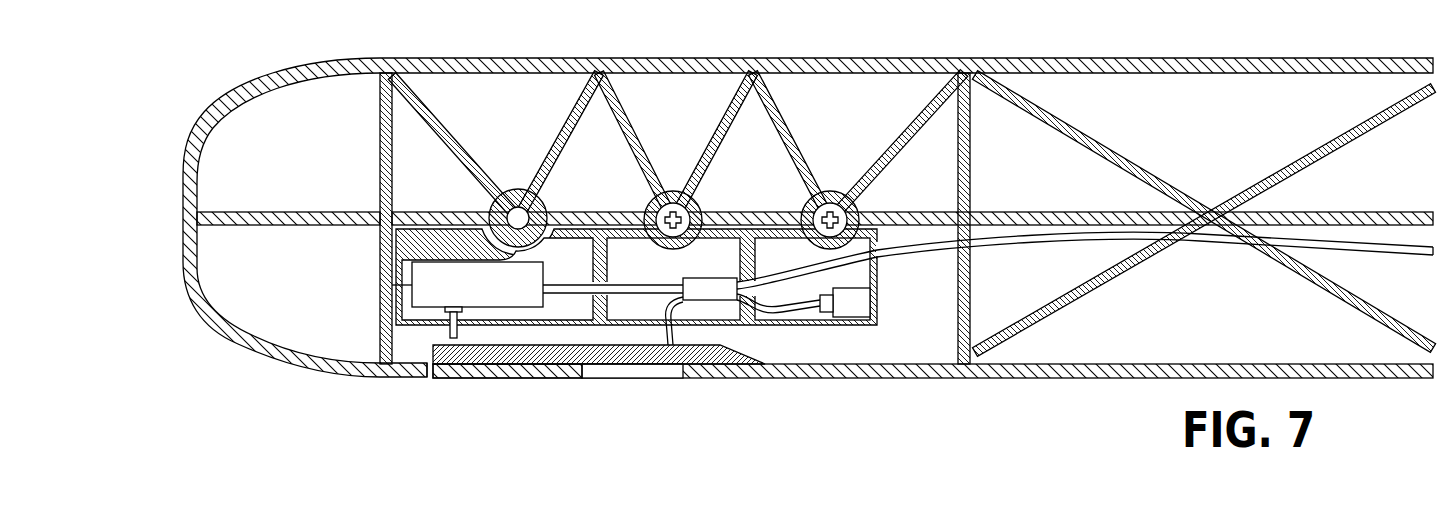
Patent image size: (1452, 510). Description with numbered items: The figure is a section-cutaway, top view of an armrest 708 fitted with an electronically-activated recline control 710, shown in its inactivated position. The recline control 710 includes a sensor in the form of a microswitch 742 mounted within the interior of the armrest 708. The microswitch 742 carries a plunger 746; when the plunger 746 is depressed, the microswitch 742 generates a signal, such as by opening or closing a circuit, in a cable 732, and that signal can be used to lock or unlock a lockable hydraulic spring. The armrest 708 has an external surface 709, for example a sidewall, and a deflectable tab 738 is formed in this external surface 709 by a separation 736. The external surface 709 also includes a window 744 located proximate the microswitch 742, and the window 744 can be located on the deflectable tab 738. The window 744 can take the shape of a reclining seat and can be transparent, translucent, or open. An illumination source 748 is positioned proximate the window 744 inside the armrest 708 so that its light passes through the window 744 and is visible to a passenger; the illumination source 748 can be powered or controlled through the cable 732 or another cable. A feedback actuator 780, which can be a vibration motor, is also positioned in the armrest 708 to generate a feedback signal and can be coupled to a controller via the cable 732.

The armrest 708 is at (217, 102).
The external surface 709 is at (1013, 378).
The electronically-activated recline control 710 is at (158, 390).
The cable 732 is at (925, 253).
The separation 736 is at (428, 392).
The deflectable tab 738 is at (492, 378).
The microswitch 742 is at (412, 283).
The window 744 is at (640, 378).
The plunger 746 is at (403, 331).
The illumination source 748 is at (705, 356).
The feedback actuator 780 is at (840, 317).